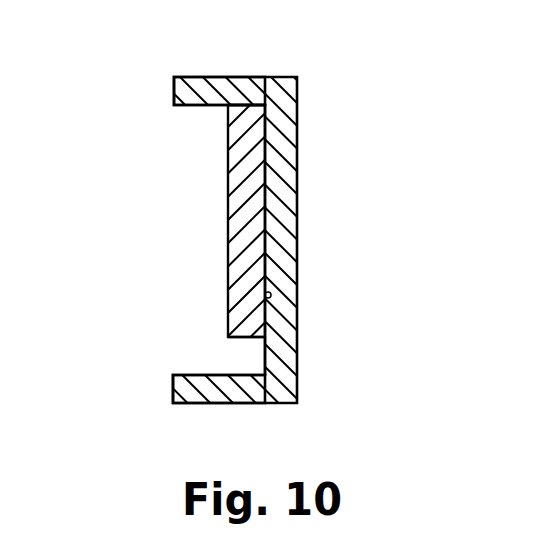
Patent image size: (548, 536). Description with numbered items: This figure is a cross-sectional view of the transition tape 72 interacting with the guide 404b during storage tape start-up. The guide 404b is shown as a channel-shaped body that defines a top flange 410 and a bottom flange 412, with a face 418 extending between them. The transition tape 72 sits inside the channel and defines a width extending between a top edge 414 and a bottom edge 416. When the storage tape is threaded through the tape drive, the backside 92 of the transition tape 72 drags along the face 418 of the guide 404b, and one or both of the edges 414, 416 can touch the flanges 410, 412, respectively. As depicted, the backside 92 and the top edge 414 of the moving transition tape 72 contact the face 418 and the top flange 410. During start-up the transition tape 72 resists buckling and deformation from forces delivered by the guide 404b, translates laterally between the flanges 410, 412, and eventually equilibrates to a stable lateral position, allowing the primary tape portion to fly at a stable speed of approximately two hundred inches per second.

The top flange 410 is at (241, 83).
The bottom flange 412 is at (234, 390).
The guide 404b is at (289, 229).
The transition tape 72 is at (240, 218).
The top edge 414 is at (238, 115).
The bottom edge 416 is at (238, 337).
The face 418 is at (265, 370).
The backside 92 is at (264, 296).